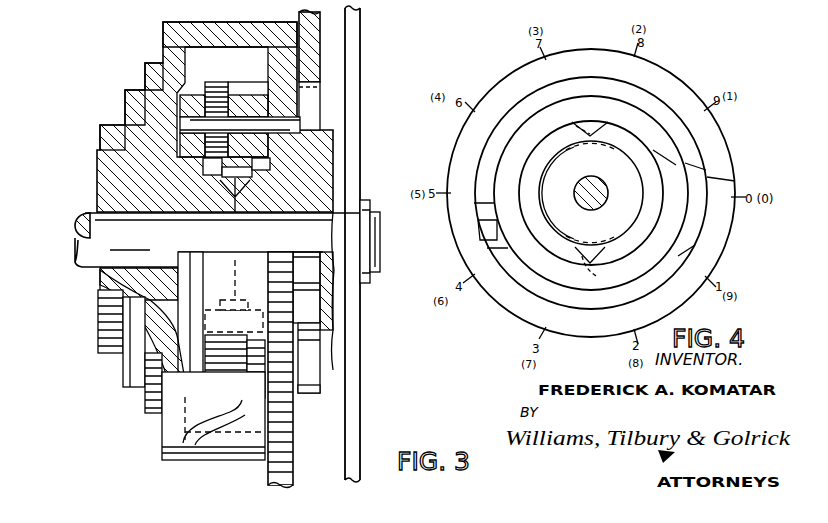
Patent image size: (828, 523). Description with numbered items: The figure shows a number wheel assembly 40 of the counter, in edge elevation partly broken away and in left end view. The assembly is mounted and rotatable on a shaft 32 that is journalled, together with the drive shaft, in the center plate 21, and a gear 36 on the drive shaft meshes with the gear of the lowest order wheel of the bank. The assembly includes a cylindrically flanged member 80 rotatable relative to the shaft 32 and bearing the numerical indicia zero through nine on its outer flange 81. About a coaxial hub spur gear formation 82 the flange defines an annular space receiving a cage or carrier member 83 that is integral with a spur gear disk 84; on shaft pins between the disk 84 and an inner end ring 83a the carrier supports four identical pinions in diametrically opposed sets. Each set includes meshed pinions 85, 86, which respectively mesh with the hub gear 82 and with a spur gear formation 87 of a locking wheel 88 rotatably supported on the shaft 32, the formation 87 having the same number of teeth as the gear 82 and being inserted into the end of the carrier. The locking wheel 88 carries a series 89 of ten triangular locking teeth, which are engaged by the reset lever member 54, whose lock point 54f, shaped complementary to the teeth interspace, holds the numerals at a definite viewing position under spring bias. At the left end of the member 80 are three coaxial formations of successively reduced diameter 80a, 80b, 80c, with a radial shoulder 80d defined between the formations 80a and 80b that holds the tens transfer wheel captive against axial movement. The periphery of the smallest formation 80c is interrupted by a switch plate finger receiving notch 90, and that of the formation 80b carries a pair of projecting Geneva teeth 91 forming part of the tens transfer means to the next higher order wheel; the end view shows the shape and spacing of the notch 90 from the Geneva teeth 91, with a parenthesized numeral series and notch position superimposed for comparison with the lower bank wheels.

In FIG. 3, the center plate 21 is at (360, 108).
In FIG. 3, the shaft 32 is at (75, 225).
In FIG. 4, the shaft 32 is at (591, 182).
In FIG. 3, the gear 36 is at (268, 470).
In FIG. 3, the number wheel assembly 40 is at (78, 190).
In FIG. 3, the lever member 54 is at (322, 31).
In FIG. 3, the lock point 54f is at (312, 100).
In FIG. 3, the cylindrically flanged member 80 is at (160, 40).
In FIG. 4, the cylindrically flanged member 80 is at (689, 77).
In FIG. 3, the coaxial formation 80a is at (145, 63).
In FIG. 4, the coaxial formation 80a is at (707, 177).
In FIG. 3, the coaxial formation 80b is at (125, 390).
In FIG. 4, the coaxial formation 80b is at (685, 163).
In FIG. 3, the coaxial formation 80c is at (100, 352).
In FIG. 4, the coaxial formation 80c is at (653, 150).
In FIG. 3, the radial shoulder 80d is at (145, 78).
In FIG. 4, the radial shoulder 80d is at (678, 256).
In FIG. 3, the housing wall 81 is at (163, 23).
In FIG. 4, the housing wall 81 is at (735, 234).
In FIG. 4, the hub spur gear formation 82 is at (599, 274).
In FIG. 3, the cage or carrier member 83 is at (222, 273).
In FIG. 3, the inner end ring 83a is at (185, 385).
In FIG. 3, the spur gear disk 84 is at (293, 440).
In FIG. 3, the pinion 85 is at (220, 82).
In FIG. 3, the pinion 86 is at (245, 90).
In FIG. 3, the spur gear formation 87 is at (260, 168).
In FIG. 3, the locking wheel 88 is at (315, 400).
In FIG. 3, the series of locking teeth 89 is at (318, 345).
In FIG. 3, the switch plate finger receiving notch 90 is at (110, 137).
In FIG. 4, the switch plate finger receiving notch 90 is at (577, 126).
In FIG. 4, the Geneva teeth 91 is at (488, 238).